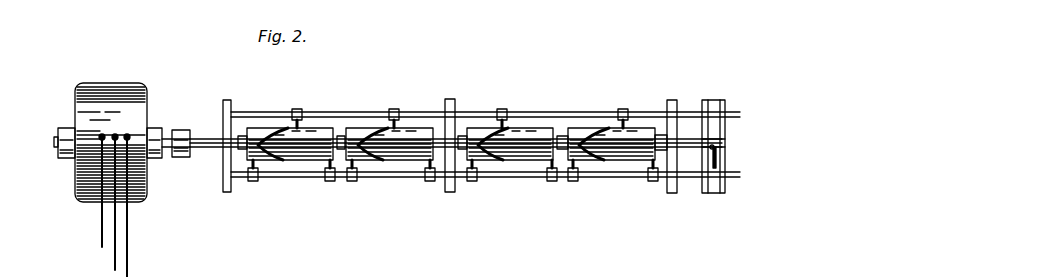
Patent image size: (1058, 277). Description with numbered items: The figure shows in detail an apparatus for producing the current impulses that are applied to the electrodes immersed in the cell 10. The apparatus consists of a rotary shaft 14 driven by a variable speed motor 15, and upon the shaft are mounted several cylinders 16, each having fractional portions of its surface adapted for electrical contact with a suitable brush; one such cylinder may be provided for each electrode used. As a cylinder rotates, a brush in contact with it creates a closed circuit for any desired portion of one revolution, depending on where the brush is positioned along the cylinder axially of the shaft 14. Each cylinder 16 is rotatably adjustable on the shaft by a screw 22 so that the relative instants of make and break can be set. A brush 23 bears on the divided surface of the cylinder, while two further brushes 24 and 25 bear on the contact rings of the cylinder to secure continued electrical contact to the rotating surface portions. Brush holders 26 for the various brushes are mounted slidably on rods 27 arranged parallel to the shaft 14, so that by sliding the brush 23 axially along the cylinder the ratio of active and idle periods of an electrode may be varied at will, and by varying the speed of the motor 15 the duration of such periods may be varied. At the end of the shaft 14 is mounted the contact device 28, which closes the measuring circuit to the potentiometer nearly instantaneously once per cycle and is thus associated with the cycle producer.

The cell 10 is at (199, 140).
The rotary shaft 14 is at (682, 146).
The variable speed motor 15 is at (112, 92).
The cylinder 16 is at (300, 158).
The screw 22 is at (241, 138).
The brush 23 is at (398, 126).
The brush 24 is at (349, 168).
The brush 25 is at (422, 170).
The brush holder 26 is at (395, 108).
The rod 27 is at (340, 113).
The contact device 28 is at (712, 107).